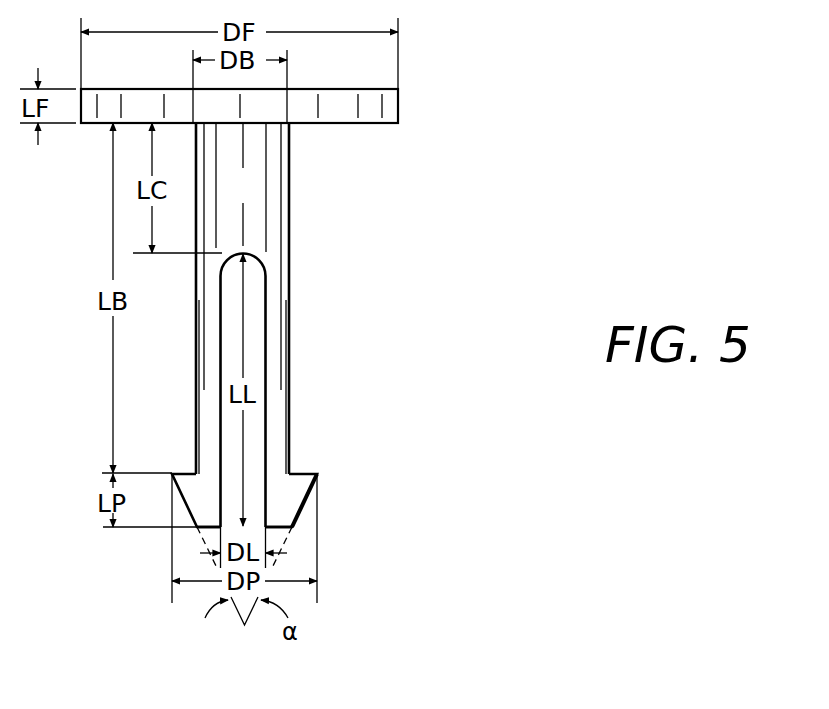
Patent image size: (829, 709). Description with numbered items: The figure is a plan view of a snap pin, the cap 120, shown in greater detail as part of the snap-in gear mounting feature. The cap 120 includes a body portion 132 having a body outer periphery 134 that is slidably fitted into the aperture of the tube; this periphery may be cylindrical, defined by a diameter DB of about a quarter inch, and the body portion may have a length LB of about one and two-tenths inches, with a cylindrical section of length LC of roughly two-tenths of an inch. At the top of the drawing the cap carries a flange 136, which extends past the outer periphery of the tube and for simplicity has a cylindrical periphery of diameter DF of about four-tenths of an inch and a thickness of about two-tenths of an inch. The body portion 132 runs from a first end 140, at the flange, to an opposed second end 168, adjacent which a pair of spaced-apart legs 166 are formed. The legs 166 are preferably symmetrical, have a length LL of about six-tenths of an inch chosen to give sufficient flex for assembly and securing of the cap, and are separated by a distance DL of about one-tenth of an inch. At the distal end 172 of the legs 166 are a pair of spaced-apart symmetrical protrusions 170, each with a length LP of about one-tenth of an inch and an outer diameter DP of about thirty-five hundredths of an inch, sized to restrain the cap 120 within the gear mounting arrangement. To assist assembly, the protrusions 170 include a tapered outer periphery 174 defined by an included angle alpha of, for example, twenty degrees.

The cap 120 is at (458, 94).
The body portion 132 is at (255, 200).
The body outer periphery 134 is at (291, 253).
The flange 136 is at (387, 103).
The first end 140 is at (338, 124).
The legs 166 is at (193, 388).
The second end 168 is at (305, 470).
The protrusions 170 is at (370, 450).
The distal end 172 is at (294, 528).
The tapered outer periphery 174 is at (307, 495).